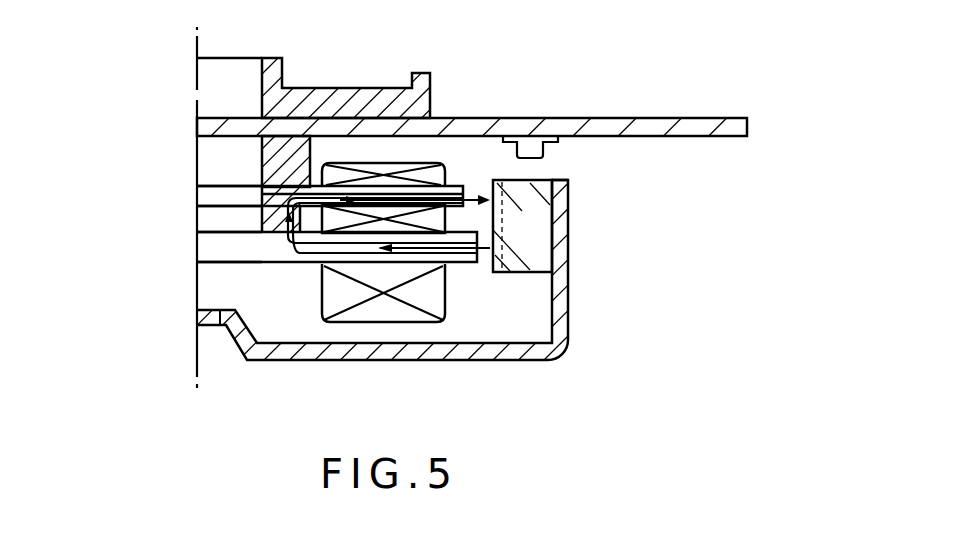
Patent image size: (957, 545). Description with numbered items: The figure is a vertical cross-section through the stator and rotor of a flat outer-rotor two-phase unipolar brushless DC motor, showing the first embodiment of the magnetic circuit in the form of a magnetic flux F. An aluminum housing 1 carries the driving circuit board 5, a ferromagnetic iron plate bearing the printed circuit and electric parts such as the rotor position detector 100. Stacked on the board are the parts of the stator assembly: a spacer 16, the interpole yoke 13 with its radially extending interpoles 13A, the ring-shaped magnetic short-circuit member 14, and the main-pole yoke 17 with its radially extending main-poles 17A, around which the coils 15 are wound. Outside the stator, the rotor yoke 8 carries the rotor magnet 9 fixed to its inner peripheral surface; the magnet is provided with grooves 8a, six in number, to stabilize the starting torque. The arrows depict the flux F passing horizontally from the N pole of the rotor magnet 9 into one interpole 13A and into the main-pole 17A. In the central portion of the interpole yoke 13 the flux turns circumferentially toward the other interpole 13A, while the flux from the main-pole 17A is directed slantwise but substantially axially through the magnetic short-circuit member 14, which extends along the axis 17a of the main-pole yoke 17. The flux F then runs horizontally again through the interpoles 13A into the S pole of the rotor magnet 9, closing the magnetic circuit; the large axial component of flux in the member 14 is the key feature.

The housing 1 is at (358, 93).
The driving circuit board 5 is at (692, 124).
The rotor yoke 8 is at (567, 347).
The grooves 8a is at (520, 183).
The rotor magnet 9 is at (530, 254).
The interpole yoke 13 is at (340, 92).
The interpole 13A is at (458, 186).
The magnetic short-circuit member 14 is at (262, 200).
The coils 15 is at (386, 310).
The spacer 16 is at (278, 196).
The main-pole yoke 17 is at (290, 250).
The axis of the main-pole yoke 17a is at (197, 221).
The main-pole 17A is at (463, 265).
The rotor position detector 100 is at (535, 152).
The magnetic flux F is at (380, 198).